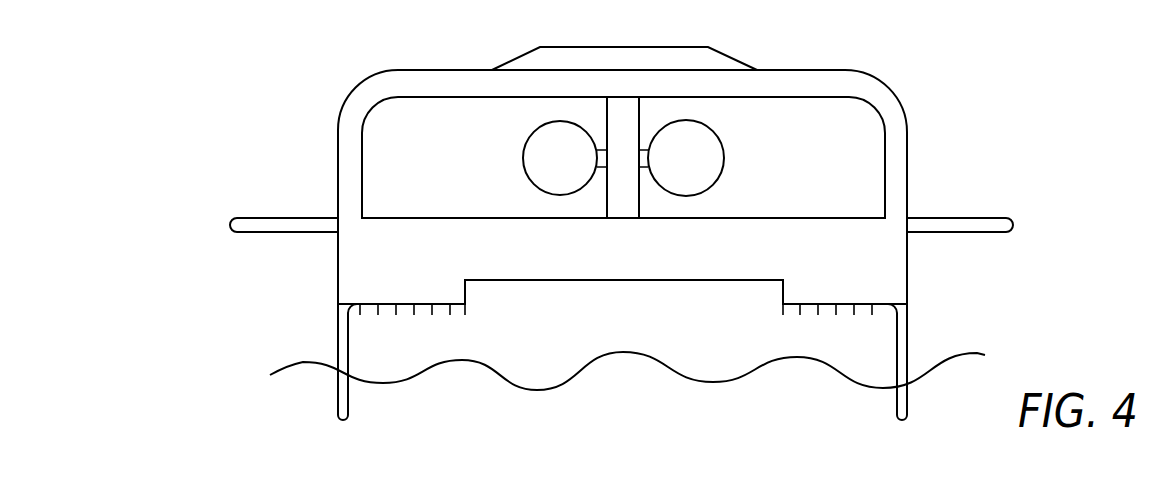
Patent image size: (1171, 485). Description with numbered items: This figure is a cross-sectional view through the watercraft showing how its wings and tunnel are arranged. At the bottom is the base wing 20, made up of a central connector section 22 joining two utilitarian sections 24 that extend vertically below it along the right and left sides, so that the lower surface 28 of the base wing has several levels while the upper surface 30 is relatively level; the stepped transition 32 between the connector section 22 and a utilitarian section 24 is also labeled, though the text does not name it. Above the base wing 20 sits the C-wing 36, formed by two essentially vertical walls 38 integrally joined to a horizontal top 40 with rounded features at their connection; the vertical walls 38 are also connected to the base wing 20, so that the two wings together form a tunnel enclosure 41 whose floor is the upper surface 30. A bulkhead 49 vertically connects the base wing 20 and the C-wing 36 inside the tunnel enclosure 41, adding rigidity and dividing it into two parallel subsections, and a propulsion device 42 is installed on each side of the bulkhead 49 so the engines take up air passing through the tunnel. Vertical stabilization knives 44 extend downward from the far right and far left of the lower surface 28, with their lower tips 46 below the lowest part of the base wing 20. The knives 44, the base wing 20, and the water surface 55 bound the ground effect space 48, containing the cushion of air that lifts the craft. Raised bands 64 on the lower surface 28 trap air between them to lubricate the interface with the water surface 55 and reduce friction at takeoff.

The base wing 20 is at (872, 248).
The connector section 22 is at (577, 260).
The utilitarian section 24 is at (800, 282).
The lower surface of the base wing 28 is at (422, 318).
The upper surface of the base wing 30 is at (482, 217).
The step 32 is at (555, 282).
The C-wing 36 is at (843, 87).
The vertical walls 38 is at (895, 150).
The horizontal top 40 is at (420, 85).
The tunnel enclosure 41 is at (765, 112).
The propulsion device 42 is at (685, 183).
The vertical stabilization knives 44 is at (903, 343).
The lower tips 46 is at (338, 405).
The ground effect space 48 is at (730, 345).
The bulkhead 49 is at (620, 203).
The water surface 55 is at (302, 362).
The raised bands 64 is at (392, 307).